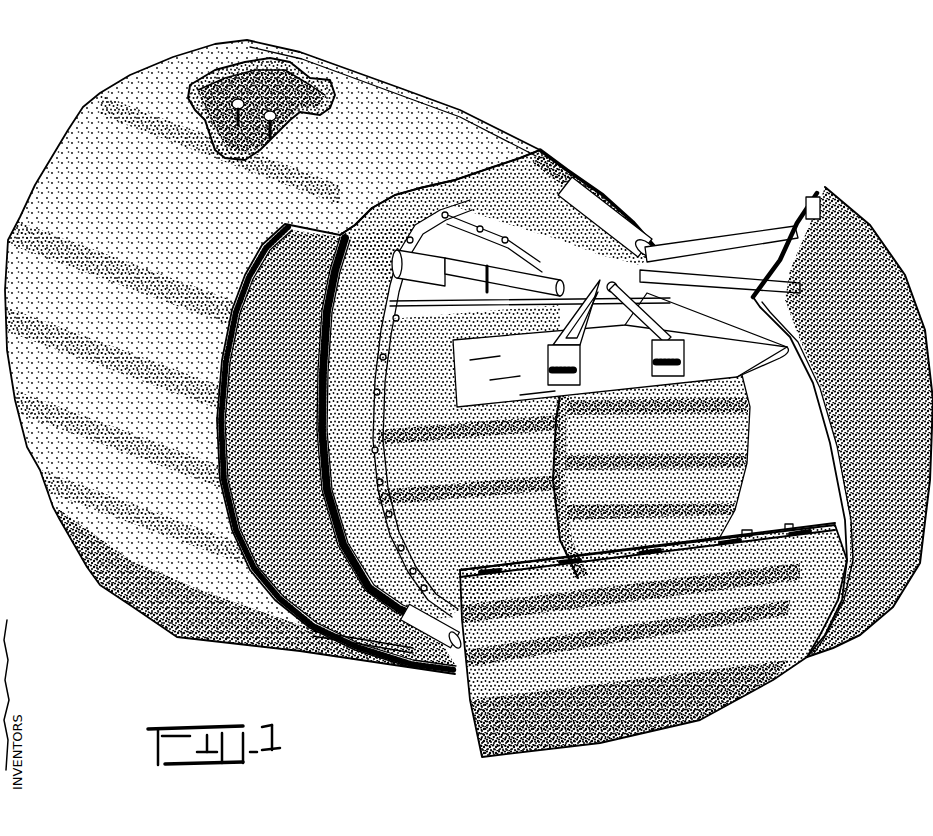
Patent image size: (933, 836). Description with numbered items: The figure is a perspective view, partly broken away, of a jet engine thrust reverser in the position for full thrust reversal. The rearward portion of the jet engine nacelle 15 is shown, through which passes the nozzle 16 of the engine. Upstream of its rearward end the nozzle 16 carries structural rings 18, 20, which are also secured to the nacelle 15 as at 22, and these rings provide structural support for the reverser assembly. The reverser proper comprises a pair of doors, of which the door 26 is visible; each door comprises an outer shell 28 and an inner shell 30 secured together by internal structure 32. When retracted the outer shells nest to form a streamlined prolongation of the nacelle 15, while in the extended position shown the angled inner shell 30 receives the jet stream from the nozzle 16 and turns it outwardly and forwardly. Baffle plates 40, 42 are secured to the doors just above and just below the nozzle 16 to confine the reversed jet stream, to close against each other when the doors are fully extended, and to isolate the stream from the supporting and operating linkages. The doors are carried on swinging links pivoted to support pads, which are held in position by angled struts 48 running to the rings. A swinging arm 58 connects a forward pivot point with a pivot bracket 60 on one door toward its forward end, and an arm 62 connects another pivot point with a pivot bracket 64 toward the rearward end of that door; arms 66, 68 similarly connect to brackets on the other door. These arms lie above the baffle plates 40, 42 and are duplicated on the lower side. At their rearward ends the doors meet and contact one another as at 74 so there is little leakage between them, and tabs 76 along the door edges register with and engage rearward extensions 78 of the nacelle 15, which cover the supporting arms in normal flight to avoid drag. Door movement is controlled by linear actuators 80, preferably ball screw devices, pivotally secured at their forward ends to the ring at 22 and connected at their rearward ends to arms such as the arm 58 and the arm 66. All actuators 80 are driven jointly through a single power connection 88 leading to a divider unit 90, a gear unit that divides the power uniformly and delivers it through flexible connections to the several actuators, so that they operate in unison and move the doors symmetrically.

The jet engine nacelle 15 is at (412, 100).
The nozzle 16 is at (746, 458).
The structural ring 18 is at (390, 338).
The structural ring 20 is at (342, 314).
The ring attachment to nacelle 22 is at (516, 160).
The reverser door 26 is at (764, 698).
The outer shell 28 is at (793, 530).
The inner shell 30 is at (745, 530).
The internal structure 32 is at (788, 523).
The baffle plate 40 is at (706, 338).
The baffle plate 42 is at (620, 350).
The strut 48 is at (462, 308).
The swinging arm 58 is at (580, 344).
The pivot bracket 60 is at (582, 376).
The arm 62 is at (618, 292).
The pivot bracket 64 is at (672, 340).
The arm 66 is at (680, 248).
The arm 68 is at (686, 278).
The door contact 74 is at (812, 395).
The tab 76 is at (805, 210).
The nacelle extension 78 is at (262, 256).
The linear actuator 80 is at (588, 187).
The power connection 88 is at (188, 90).
The divider unit 90 is at (333, 78).